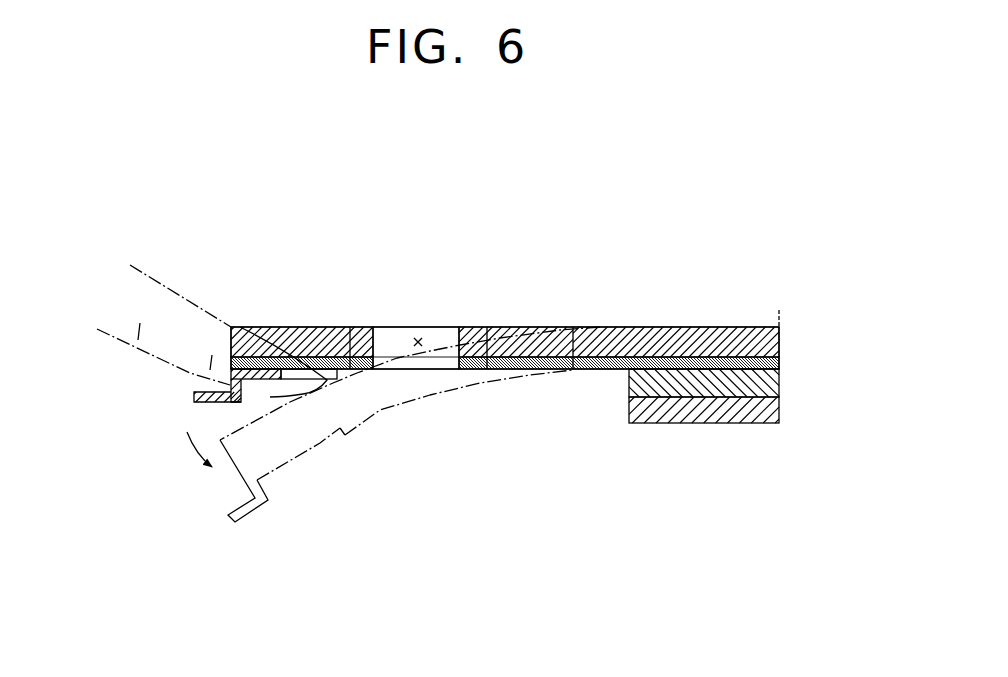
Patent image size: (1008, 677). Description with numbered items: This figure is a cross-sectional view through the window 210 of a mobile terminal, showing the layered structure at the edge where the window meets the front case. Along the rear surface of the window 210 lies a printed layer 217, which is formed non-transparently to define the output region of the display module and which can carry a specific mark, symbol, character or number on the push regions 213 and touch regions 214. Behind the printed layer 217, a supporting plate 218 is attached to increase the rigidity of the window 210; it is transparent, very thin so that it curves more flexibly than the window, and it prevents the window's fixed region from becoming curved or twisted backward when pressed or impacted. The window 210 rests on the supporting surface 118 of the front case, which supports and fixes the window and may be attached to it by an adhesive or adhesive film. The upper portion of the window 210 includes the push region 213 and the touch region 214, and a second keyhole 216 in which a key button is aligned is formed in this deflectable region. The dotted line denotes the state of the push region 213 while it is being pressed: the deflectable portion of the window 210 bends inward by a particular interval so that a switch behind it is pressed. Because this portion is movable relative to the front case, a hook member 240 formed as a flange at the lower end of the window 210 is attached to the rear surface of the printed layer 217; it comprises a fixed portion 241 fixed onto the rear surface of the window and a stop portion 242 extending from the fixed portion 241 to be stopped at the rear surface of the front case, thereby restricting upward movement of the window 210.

The window 210 is at (718, 310).
The push region 213 is at (308, 327).
The touch region 214 is at (520, 327).
The second keyhole 216 is at (417, 337).
The printed layer 217 is at (779, 363).
The supporting plate 218 is at (779, 385).
The supporting surface 118 is at (779, 410).
The hook member 240 is at (203, 403).
The fixed portion 241 is at (265, 379).
The stop portion 242 is at (194, 396).